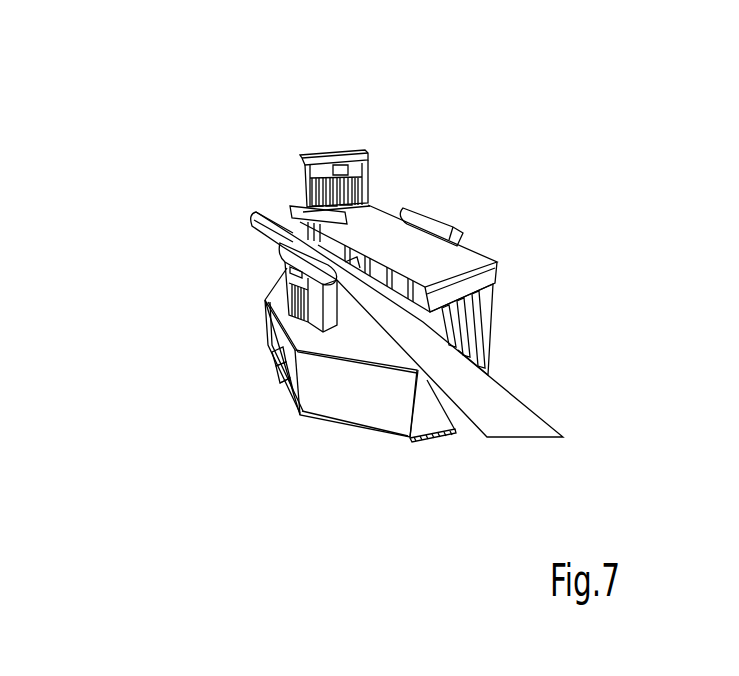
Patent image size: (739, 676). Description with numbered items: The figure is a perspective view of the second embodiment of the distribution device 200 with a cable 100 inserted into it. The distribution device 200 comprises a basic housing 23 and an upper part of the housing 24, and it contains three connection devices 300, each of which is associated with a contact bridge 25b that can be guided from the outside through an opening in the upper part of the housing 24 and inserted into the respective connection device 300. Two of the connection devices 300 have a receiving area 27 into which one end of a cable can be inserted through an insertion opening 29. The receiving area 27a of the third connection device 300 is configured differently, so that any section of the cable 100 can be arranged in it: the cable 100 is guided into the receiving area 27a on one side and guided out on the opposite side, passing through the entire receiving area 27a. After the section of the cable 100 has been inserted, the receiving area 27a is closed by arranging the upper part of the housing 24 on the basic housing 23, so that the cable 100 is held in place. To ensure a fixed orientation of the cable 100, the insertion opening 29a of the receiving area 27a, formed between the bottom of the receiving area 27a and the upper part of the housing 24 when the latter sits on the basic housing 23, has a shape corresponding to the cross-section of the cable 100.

The cable 100 is at (463, 400).
The distribution device 200 is at (627, 109).
The basic housing 23 is at (353, 400).
The upper part of the housing 24 is at (482, 258).
The contact bridge 25b is at (283, 264).
The receiving area 27 is at (277, 368).
The receiving area 27a is at (315, 220).
The insertion opening 29 is at (273, 353).
The insertion opening 29a is at (305, 230).
The connection device 300 is at (283, 380).